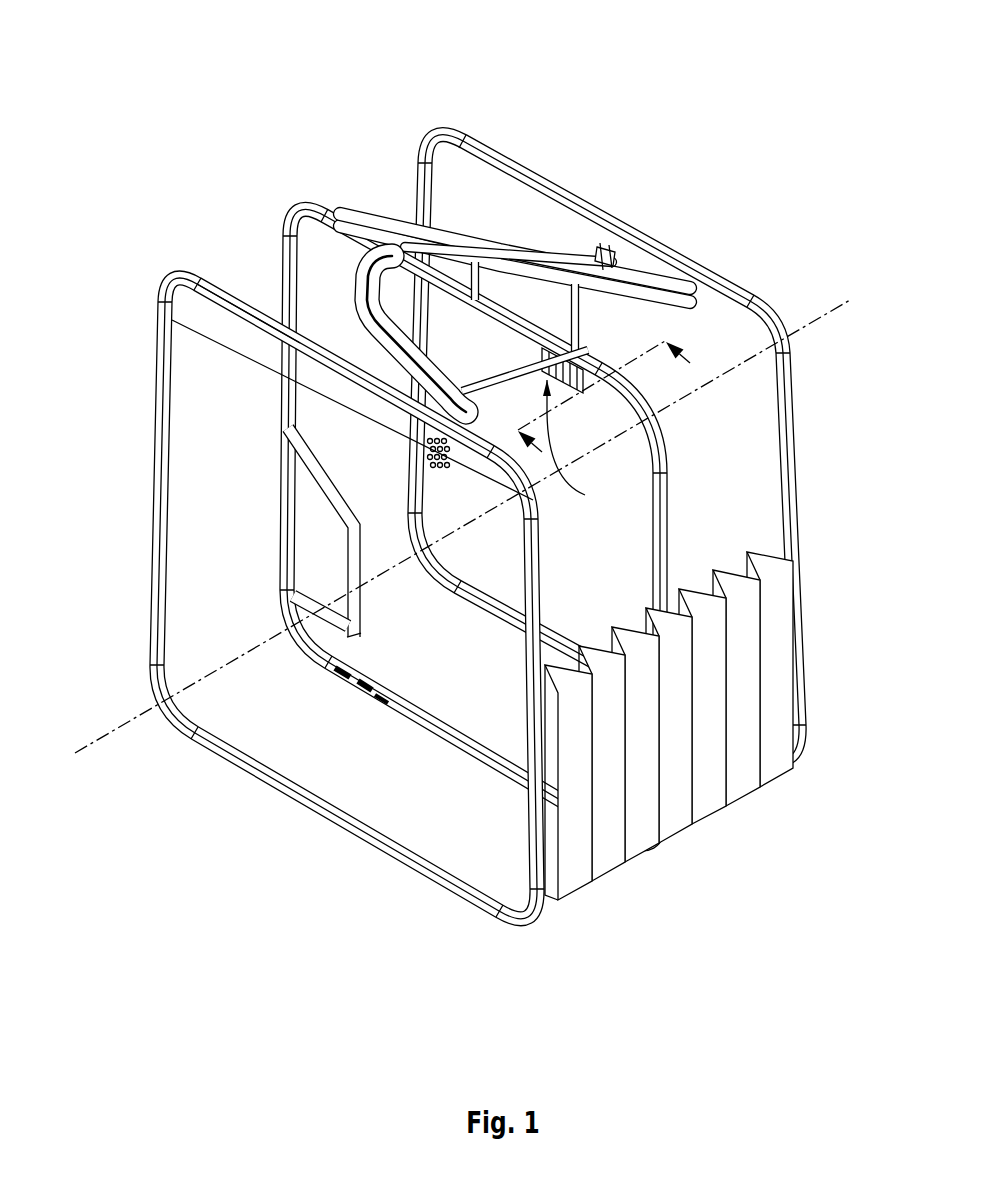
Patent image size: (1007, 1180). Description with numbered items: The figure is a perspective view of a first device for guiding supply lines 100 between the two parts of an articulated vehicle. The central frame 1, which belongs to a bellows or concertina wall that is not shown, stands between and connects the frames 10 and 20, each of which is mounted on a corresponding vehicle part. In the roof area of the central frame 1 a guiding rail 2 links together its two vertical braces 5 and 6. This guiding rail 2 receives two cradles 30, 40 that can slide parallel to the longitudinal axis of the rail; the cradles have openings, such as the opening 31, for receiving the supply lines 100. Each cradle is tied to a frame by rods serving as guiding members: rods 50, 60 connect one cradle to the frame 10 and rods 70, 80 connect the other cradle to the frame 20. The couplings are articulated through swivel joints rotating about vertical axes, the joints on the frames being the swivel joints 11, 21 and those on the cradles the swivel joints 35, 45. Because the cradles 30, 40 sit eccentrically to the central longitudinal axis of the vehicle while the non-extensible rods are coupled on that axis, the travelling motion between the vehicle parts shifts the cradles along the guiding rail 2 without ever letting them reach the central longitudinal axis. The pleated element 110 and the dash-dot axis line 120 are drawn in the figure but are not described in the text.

The central frame 1 is at (295, 212).
The guiding rail 2 is at (618, 422).
The vertical brace 5 is at (605, 445).
The vertical brace 6 is at (282, 498).
The frame 10 is at (300, 803).
The swivel joint 11 is at (608, 243).
The frame 20 is at (757, 302).
The swivel joint 21 is at (360, 402).
The cradle 30 is at (594, 392).
The opening 31 is at (590, 381).
The swivel joint 35 is at (585, 495).
The cradle 40 is at (366, 256).
The swivel joint 45 is at (403, 250).
The rod 50 is at (567, 262).
The rod 60 is at (606, 263).
The rod 70 is at (305, 311).
The rod 80 is at (655, 464).
The supply lines 100 is at (477, 290).
The filter pleats 110 is at (657, 777).
The longitudinal axis 120 is at (142, 718).